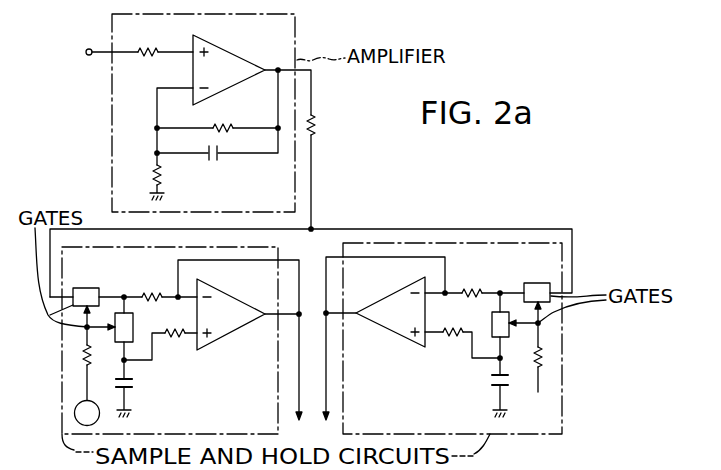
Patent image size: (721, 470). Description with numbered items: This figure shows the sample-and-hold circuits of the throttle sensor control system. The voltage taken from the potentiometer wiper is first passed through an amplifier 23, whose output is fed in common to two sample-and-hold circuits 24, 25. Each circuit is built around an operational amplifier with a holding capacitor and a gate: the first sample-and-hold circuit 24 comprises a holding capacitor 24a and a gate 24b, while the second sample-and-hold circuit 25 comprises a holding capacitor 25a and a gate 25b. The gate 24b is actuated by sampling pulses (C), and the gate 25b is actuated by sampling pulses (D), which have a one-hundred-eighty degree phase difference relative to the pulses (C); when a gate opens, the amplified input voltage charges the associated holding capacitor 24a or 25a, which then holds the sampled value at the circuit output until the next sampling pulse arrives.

The amplifier 23 is at (298, 53).
The sample-and-hold circuit 24 is at (161, 331).
The holding capacitor 24a is at (134, 383).
The gate 24b is at (100, 280).
The sample-and-hold circuit 25 is at (465, 338).
The holding capacitor 25a is at (492, 385).
The gate 25b is at (540, 283).